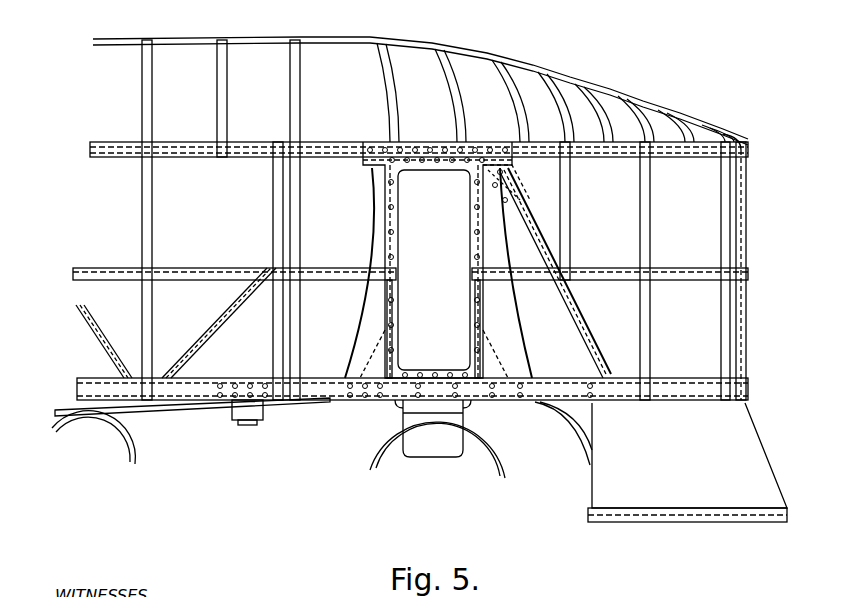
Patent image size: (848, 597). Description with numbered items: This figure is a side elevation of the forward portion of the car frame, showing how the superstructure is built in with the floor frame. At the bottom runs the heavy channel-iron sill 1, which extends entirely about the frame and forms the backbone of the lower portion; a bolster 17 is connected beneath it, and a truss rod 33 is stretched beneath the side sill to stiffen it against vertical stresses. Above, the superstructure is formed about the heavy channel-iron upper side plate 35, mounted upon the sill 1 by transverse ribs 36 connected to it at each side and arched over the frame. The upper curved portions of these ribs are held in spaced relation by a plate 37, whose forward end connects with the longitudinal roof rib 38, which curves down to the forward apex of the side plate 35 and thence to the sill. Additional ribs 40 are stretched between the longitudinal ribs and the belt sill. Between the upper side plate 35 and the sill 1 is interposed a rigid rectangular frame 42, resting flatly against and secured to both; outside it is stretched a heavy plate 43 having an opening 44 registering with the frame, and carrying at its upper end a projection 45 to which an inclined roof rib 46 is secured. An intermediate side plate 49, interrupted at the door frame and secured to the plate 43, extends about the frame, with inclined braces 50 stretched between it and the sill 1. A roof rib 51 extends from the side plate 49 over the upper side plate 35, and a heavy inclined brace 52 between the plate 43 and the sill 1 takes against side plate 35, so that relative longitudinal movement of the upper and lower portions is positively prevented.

The sill 1 is at (318, 395).
The bolster 17 is at (240, 410).
The truss rod 33 is at (113, 415).
The upper side plate 35 is at (176, 143).
The transverse rib 36 is at (153, 212).
The plate 37 is at (190, 40).
The longitudinal roof rib 38 is at (520, 62).
The rib 40 is at (655, 326).
The rigid rectangular frame 42 is at (483, 218).
The plate 43 is at (500, 330).
The opening 44 is at (440, 293).
The projection 45 is at (382, 137).
The inclined roof rib 46 is at (448, 82).
The intermediate side plate 49 is at (203, 268).
The inclined brace 50 is at (210, 323).
The roof rib 51 is at (571, 243).
The heavy inclined brace 52 is at (570, 324).